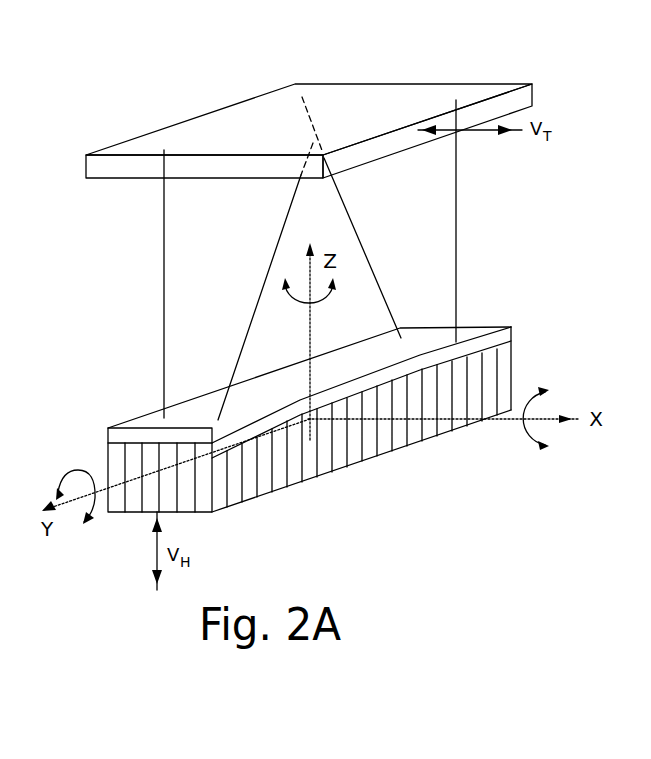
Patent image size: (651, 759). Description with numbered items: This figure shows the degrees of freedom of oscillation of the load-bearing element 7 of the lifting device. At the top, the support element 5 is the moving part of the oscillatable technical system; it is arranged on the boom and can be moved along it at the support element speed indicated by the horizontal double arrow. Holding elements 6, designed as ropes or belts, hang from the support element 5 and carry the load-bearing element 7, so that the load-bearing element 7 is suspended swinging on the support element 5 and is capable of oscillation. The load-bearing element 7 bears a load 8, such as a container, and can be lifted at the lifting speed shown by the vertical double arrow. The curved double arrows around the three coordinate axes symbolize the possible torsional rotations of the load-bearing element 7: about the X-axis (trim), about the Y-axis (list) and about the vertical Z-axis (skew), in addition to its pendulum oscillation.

The support element 5 is at (352, 104).
The holding elements 6 is at (162, 273).
The load-bearing element 7 is at (130, 437).
The load 8 is at (424, 448).